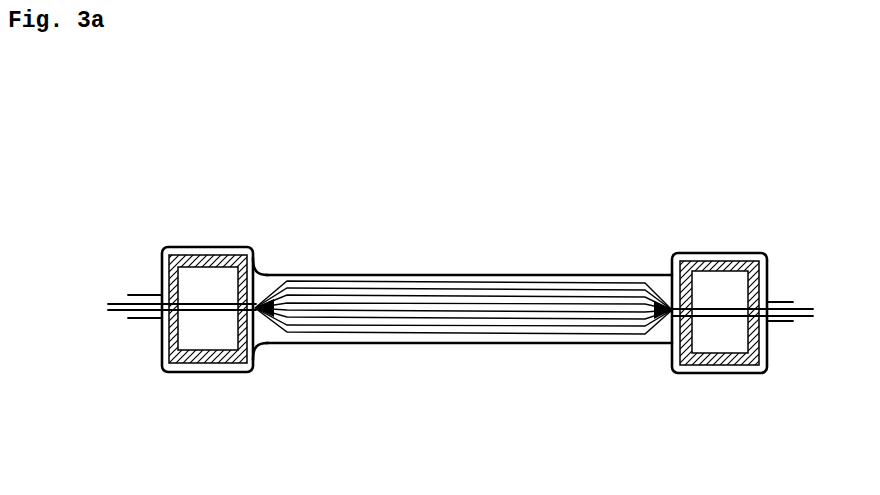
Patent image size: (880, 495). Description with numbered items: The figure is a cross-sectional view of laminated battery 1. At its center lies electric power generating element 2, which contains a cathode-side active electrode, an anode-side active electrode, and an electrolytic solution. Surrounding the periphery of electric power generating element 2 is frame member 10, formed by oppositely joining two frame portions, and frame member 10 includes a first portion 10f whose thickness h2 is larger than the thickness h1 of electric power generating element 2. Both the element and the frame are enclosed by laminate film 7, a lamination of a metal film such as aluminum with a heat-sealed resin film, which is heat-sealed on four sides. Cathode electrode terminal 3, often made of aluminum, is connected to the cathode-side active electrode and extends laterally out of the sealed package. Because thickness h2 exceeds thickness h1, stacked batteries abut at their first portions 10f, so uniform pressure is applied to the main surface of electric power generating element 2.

The laminated battery 1 is at (592, 179).
The electric power generating element 2 is at (467, 335).
The cathode electrode terminal 3 is at (113, 313).
The laminate film 7 is at (260, 267).
The frame member 10 is at (668, 358).
The first portion 10f is at (717, 262).
The thickness of electric power generating element h1 is at (670, 352).
The thickness of first portion h2 is at (853, 392).